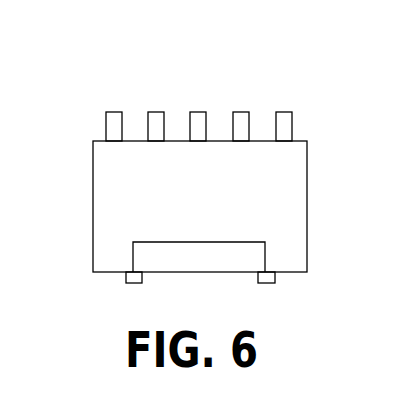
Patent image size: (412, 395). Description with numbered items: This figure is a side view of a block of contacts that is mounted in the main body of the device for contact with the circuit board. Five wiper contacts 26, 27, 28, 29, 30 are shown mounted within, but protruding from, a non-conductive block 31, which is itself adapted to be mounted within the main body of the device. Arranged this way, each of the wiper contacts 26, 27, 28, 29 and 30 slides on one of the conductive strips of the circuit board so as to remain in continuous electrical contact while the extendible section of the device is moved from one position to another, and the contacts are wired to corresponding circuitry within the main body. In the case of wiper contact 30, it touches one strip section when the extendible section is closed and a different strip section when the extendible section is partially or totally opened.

The wiper contact 26 is at (284, 112).
The wiper contact 27 is at (240, 112).
The wiper contact 28 is at (200, 112).
The wiper contact 29 is at (156, 112).
The wiper contact 30 is at (117, 112).
The non-conductive block 31 is at (287, 180).